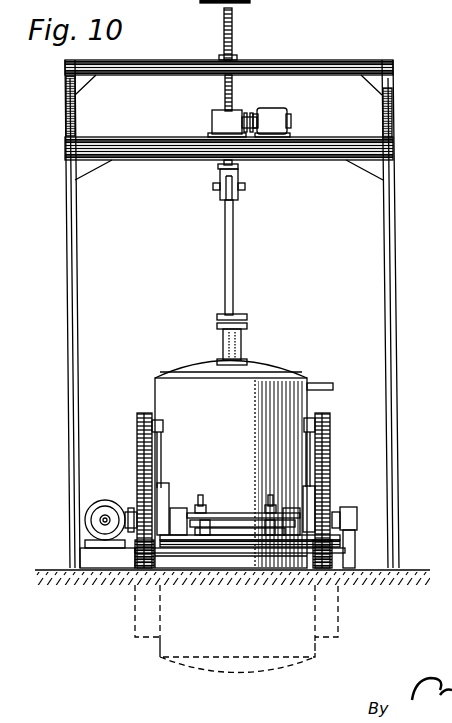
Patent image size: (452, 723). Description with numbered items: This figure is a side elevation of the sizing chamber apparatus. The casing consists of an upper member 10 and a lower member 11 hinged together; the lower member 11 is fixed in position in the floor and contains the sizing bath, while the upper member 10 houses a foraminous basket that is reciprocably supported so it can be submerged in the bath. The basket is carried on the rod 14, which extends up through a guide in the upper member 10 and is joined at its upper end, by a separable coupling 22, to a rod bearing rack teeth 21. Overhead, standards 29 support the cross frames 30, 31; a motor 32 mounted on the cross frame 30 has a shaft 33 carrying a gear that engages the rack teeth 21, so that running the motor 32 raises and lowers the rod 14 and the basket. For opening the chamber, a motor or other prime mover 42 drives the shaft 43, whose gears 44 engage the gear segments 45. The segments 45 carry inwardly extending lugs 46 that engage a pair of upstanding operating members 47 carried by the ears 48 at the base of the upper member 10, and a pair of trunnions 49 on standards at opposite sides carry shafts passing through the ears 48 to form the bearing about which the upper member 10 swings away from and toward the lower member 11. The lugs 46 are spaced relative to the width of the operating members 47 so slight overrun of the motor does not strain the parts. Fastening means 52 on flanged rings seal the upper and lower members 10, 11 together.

The upper member 10 is at (304, 378).
The lower member 11 is at (248, 560).
The rod 14 is at (228, 250).
The rack teeth 21 is at (236, 45).
The separable coupling 22 is at (241, 186).
The standards 29 is at (396, 288).
The cross frame 30 is at (323, 137).
The cross frame 31 is at (345, 60).
The motor 32 is at (272, 114).
The shaft 33 is at (245, 110).
The motor 42 is at (106, 502).
The shaft 43 is at (207, 550).
The gears 44 is at (145, 570).
The gear segments 45 is at (330, 462).
The lugs 46 is at (162, 427).
The operating members 47 is at (163, 452).
The ears 48 is at (169, 498).
The trunnions 49 is at (354, 508).
The fastening means 52 is at (258, 500).